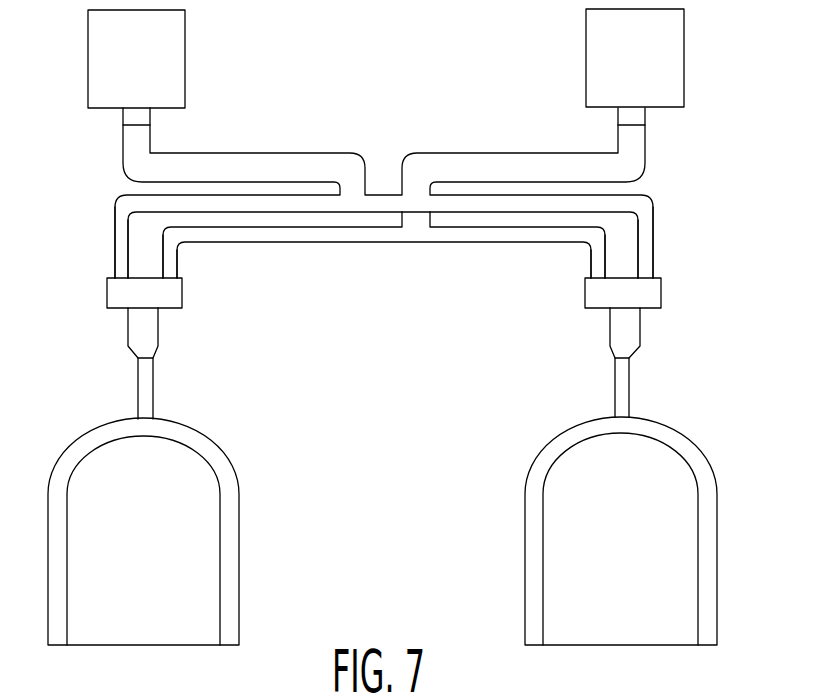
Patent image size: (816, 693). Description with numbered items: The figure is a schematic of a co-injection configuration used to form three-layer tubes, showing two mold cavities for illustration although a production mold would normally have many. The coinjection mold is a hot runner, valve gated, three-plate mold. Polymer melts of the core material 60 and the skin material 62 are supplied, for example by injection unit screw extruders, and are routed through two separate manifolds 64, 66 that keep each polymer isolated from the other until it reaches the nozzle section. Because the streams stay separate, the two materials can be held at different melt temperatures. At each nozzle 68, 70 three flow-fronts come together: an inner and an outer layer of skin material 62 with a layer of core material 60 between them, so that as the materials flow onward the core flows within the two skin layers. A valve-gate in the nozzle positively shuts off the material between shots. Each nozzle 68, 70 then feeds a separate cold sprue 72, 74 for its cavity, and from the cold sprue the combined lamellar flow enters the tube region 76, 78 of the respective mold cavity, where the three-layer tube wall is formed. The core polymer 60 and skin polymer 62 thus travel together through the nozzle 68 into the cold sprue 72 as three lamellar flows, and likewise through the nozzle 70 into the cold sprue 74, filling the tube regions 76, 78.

The core polymer melt 60 is at (185, 48).
The skin polymer melt 62 is at (586, 52).
The first manifold 64 is at (113, 240).
The second manifold 66 is at (180, 263).
The nozzle 68 is at (160, 330).
The nozzle 70 is at (605, 326).
The cold sprue 72 is at (155, 392).
The cold sprue 74 is at (613, 385).
The tube region 76 is at (240, 507).
The tube region 78 is at (525, 532).